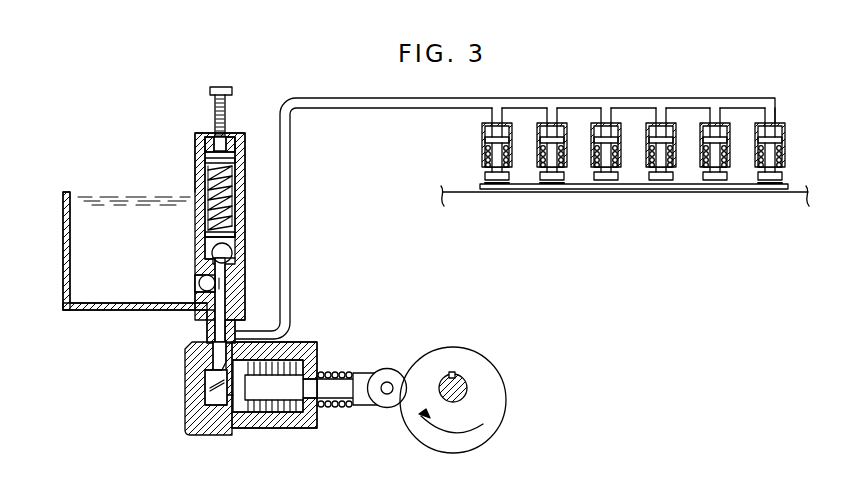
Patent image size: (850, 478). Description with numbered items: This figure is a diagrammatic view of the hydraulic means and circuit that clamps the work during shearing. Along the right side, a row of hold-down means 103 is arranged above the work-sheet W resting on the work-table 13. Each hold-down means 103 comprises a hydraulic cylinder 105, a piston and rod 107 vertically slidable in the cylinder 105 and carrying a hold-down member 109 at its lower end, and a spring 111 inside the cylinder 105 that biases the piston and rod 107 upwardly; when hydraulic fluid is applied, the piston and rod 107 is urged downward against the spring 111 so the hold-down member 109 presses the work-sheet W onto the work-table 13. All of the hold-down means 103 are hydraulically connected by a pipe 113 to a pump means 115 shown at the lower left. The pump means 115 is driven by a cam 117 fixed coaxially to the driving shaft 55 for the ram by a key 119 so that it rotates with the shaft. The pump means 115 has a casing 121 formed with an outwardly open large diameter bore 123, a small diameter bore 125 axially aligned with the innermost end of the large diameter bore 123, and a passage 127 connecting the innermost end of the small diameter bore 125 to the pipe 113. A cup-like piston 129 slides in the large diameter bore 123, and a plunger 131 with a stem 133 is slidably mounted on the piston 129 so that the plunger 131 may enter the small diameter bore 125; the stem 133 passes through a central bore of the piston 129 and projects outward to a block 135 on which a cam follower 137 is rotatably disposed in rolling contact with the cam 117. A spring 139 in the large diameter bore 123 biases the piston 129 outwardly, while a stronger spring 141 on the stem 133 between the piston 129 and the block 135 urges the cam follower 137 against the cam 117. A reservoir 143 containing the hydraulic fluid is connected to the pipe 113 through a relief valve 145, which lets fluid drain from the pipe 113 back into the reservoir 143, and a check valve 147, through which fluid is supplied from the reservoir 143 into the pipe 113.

The work-table 13 is at (440, 196).
The driving shaft 55 is at (467, 399).
The hold-down means 103 is at (664, 92).
The hydraulic cylinder 105 is at (510, 132).
The piston and rod 107 is at (484, 166).
The hold-down member 109 is at (506, 184).
The spring 111 is at (635, 172).
The pipe 113 is at (365, 109).
The pump means 115 is at (310, 330).
The cam 117 is at (506, 395).
The key 119 is at (455, 372).
The casing 121 is at (206, 428).
The large diameter bore 123 is at (214, 355).
The small diameter bore 125 is at (217, 394).
The passage 127 is at (213, 383).
The cup-like piston 129 is at (320, 360).
The plunger 131 is at (267, 396).
The stem 133 is at (350, 393).
The block 135 is at (364, 377).
The cam follower 137 is at (394, 376).
The spring 139 is at (300, 416).
The spring 141 is at (328, 407).
The reservoir 143 is at (97, 297).
The relief valve 145 is at (212, 253).
The check valve 147 is at (199, 283).
The work-sheet W is at (700, 190).